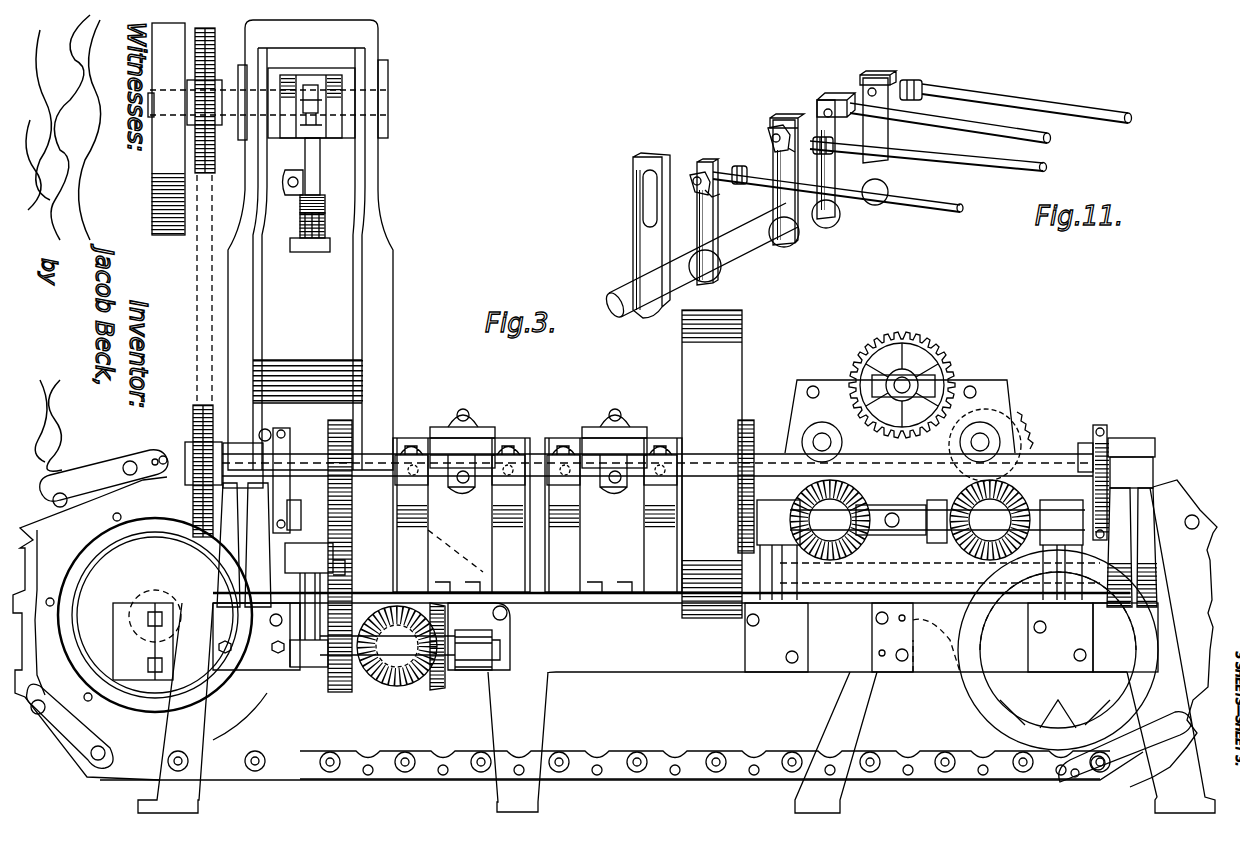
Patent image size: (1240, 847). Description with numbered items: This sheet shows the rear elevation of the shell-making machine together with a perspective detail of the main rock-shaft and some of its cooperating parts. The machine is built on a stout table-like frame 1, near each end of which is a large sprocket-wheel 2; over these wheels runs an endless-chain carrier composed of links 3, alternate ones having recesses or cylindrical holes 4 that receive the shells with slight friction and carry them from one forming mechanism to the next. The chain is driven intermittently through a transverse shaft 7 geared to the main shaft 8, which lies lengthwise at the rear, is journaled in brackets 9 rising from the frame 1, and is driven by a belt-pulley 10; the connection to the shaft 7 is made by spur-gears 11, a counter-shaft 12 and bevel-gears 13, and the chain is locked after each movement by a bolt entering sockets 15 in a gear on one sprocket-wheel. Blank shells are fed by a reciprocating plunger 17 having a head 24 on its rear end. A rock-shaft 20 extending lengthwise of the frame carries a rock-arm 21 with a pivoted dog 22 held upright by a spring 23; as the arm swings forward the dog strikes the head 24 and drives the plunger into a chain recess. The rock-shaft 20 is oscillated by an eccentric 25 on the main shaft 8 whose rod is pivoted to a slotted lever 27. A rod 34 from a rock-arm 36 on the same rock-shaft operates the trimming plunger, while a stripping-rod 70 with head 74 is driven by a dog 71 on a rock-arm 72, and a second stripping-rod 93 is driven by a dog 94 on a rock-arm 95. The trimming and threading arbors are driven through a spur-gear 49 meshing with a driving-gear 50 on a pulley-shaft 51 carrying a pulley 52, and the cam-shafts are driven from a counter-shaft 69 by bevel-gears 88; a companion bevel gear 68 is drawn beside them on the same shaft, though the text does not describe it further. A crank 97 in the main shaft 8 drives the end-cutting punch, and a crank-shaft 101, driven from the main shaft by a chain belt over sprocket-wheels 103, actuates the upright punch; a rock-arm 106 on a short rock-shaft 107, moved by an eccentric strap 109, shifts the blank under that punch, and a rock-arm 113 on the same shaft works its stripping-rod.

In FIG. 3, the frame 1 is at (665, 665).
In FIG. 3, the sprocket-wheel 2 is at (990, 700).
In FIG. 3, the links 3 is at (380, 772).
In FIG. 3, the recesses or cylindrical holes 4 is at (443, 776).
In FIG. 3, the shaft 7 is at (382, 692).
In FIG. 3, the main shaft 8 is at (1040, 458).
In FIG. 3, the brackets 9 is at (220, 565).
In FIG. 3, the belt-pulley 10 is at (718, 372).
In FIG. 3, the spur-gears 11 is at (330, 440).
In FIG. 3, the counter-shaft 12 is at (387, 646).
In FIG. 3, the bevel-gears 13 is at (420, 690).
In FIG. 3, the sockets 15 is at (121, 518).
In FIG. 11, the reciprocating plunger 17 is at (905, 210).
In FIG. 3, the rock-shaft 20 is at (852, 598).
In FIG. 11, the rock-shaft 20 is at (752, 245).
In FIG. 11, the rock-arm 21 is at (716, 220).
In FIG. 11, the pivoted dog 22 is at (690, 175).
In FIG. 11, the spring 23 is at (705, 184).
In FIG. 11, the head 24 is at (743, 164).
In FIG. 3, the eccentric 25 is at (292, 432).
In FIG. 11, the lever 27 is at (640, 252).
In FIG. 11, the rod 34 is at (1000, 128).
In FIG. 11, the rock-arm 36 is at (817, 100).
In FIG. 3, the spur-gear 49 is at (1020, 425).
In FIG. 3, the driving-gear 50 is at (912, 332).
In FIG. 3, the pulley-shaft 51 is at (905, 385).
In FIG. 3, the pulley 52 is at (945, 345).
In FIG. 3, the bevel gear 68 is at (945, 533).
In FIG. 3, the counter-shaft 69 is at (898, 530).
In FIG. 11, the stripping-rod 70 is at (972, 158).
In FIG. 11, the dog 71 is at (770, 130).
In FIG. 11, the rock-arm 72 is at (775, 122).
In FIG. 11, the head 74 is at (818, 118).
In FIG. 3, the bevel-gears 88 is at (866, 500).
In FIG. 11, the stripping-rod 93 is at (1085, 117).
In FIG. 11, the dog 94 is at (862, 88).
In FIG. 11, the rock-arm 95 is at (874, 74).
In FIG. 3, the crank 97 is at (613, 418).
In FIG. 3, the crank-shaft 101 is at (390, 106).
In FIG. 3, the sprocket-wheels 103 is at (213, 152).
In FIG. 3, the rock-arm 106 is at (282, 616).
In FIG. 3, the short rock-shaft 107 is at (359, 582).
In FIG. 3, the strap 109 is at (309, 569).
In FIG. 3, the rock-arm 113 is at (309, 591).